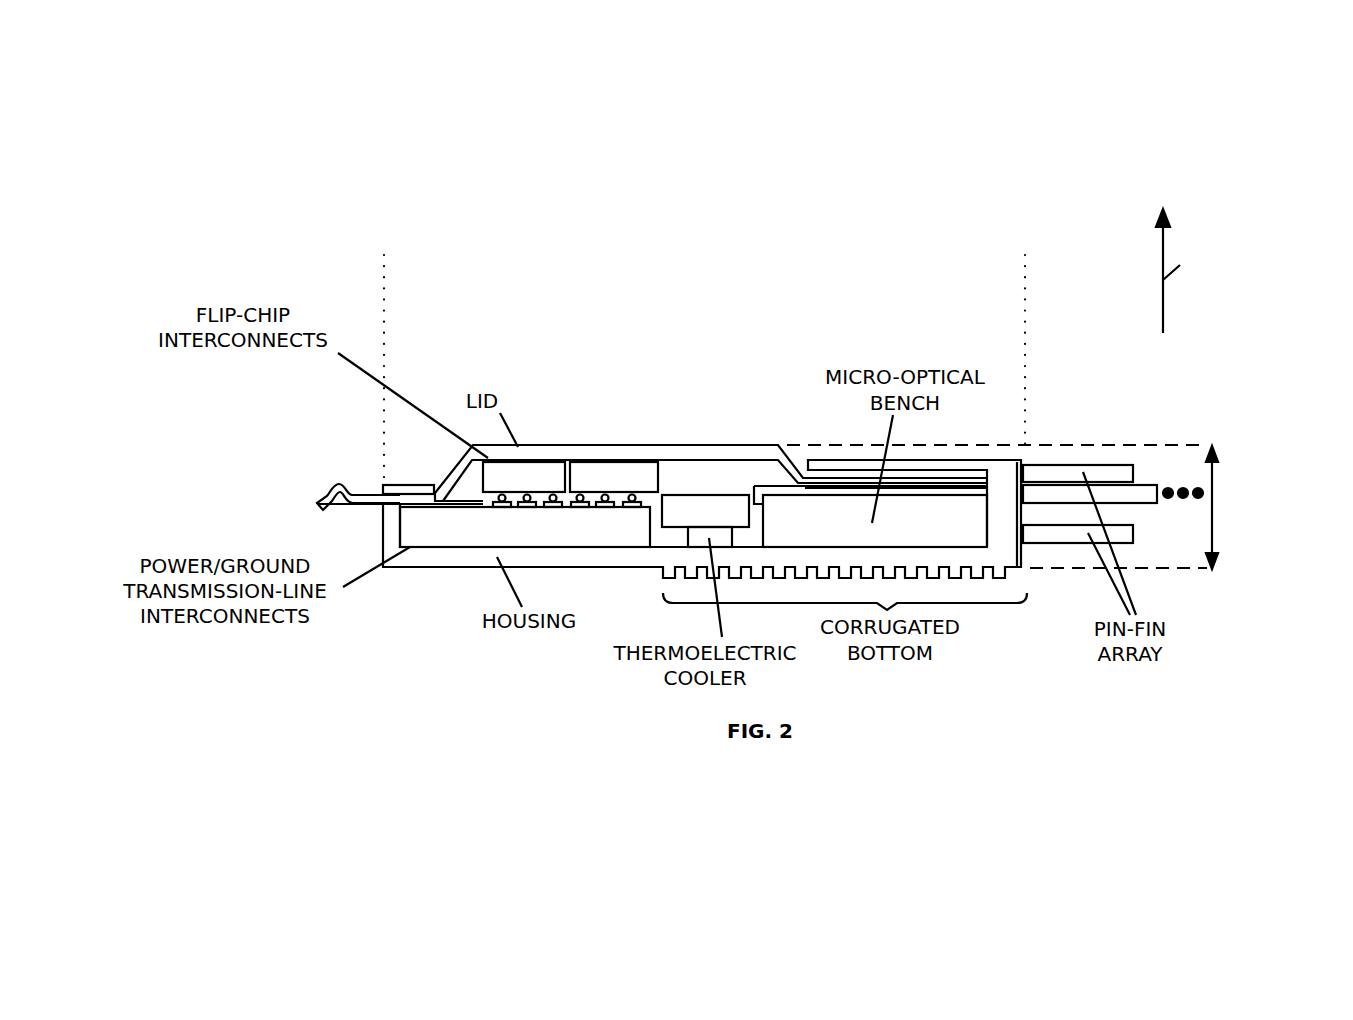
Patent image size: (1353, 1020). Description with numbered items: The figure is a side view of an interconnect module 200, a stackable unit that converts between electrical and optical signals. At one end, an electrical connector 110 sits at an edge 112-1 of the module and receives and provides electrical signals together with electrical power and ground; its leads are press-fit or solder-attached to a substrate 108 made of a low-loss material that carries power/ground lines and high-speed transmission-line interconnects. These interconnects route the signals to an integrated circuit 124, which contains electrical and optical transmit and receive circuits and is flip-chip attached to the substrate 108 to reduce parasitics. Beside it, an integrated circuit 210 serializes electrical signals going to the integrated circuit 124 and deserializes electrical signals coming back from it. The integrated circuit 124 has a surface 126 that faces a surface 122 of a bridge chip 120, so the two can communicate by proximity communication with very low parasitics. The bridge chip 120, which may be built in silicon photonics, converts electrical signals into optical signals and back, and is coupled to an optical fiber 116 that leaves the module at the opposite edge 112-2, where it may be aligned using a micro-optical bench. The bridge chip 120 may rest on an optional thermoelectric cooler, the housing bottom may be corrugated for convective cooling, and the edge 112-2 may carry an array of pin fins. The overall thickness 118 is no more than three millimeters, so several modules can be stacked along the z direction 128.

The interconnect module 200 is at (258, 183).
The edge 112-1 is at (385, 341).
The edge 112-2 is at (1025, 327).
The integrated circuit 124 is at (605, 477).
The integrated circuit 210 is at (520, 477).
The surface 126 is at (658, 490).
The surface 122 is at (737, 497).
The bridge chip 120 is at (707, 510).
The optical fiber 116 is at (928, 490).
The electrical connector 110 is at (322, 497).
The z direction 128 is at (1231, 271).
The thickness 118 is at (1067, 507).
The substrate 108 is at (467, 530).